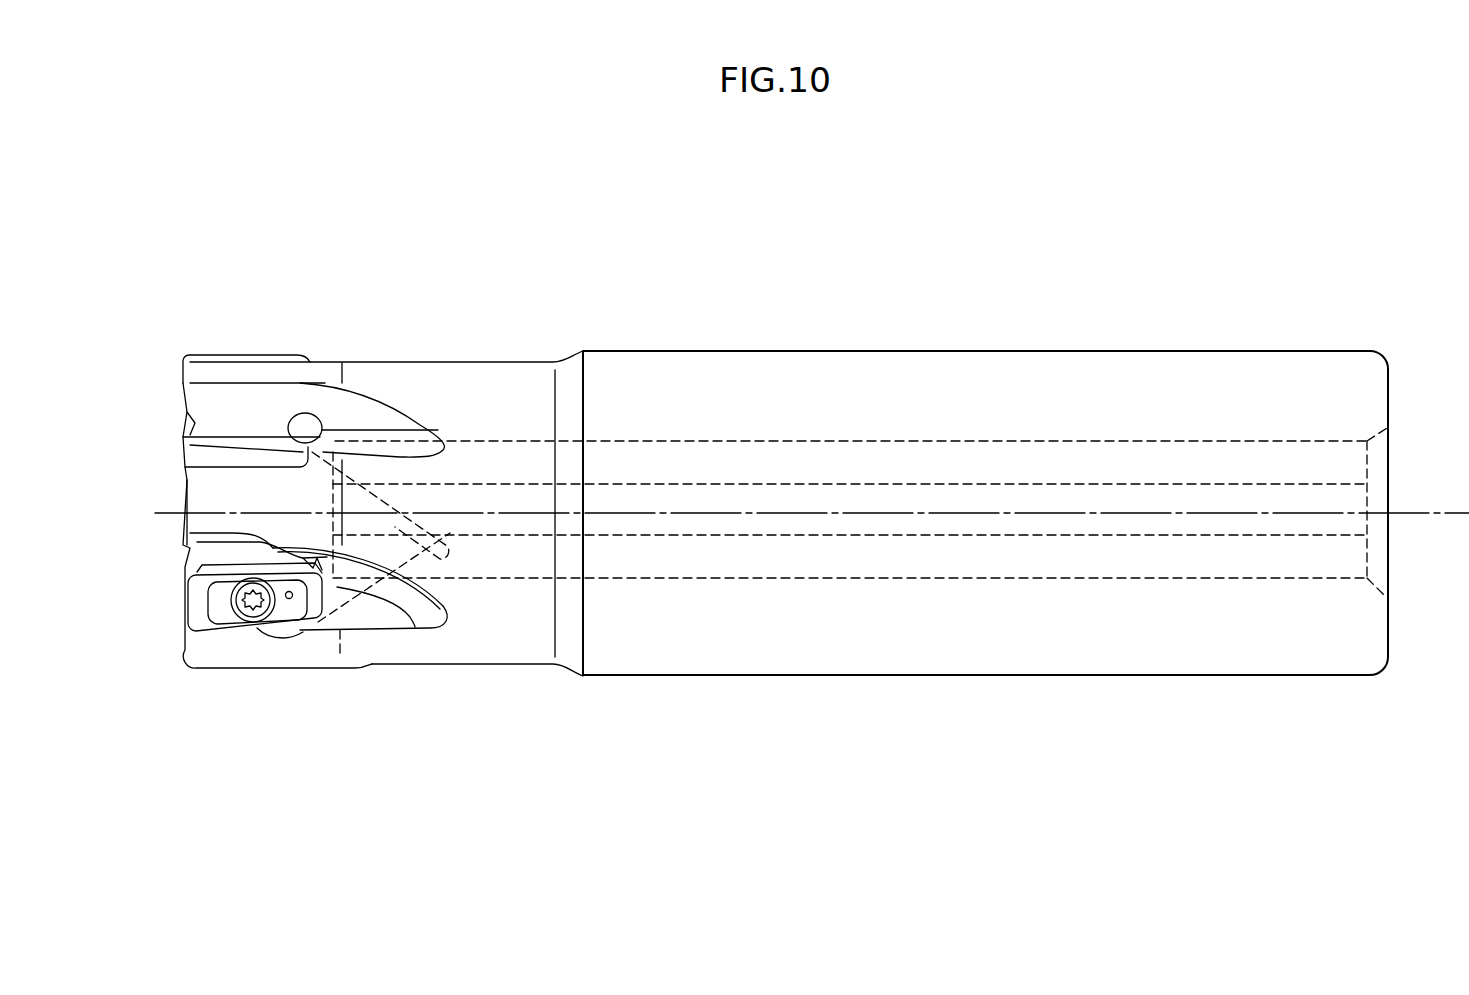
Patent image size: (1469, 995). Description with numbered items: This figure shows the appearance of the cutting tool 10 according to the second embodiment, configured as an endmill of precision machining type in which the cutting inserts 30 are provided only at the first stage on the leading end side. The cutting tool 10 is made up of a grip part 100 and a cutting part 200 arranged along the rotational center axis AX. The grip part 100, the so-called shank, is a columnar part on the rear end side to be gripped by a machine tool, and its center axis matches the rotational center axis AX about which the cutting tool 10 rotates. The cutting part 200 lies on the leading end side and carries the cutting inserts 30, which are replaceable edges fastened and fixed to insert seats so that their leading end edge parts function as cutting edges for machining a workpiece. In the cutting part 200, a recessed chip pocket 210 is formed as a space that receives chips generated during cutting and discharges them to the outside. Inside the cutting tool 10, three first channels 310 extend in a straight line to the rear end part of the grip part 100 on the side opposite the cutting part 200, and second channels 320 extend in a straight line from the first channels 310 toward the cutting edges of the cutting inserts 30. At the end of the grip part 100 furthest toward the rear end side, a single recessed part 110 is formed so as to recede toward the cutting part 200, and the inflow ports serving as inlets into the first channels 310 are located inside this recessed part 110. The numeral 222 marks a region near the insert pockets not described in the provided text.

The cutting tool 10 is at (1272, 222).
The grip part 100 is at (878, 322).
The recessed part 110 is at (1377, 503).
The cutting part 200 is at (318, 290).
The chip pocket 210 is at (253, 407).
The chip pocket 222 is at (307, 418).
The cutting insert 30 is at (213, 440).
The first channel 310 is at (1011, 446).
The second channel 320 is at (375, 472).
The rotational center axis AX is at (1443, 512).